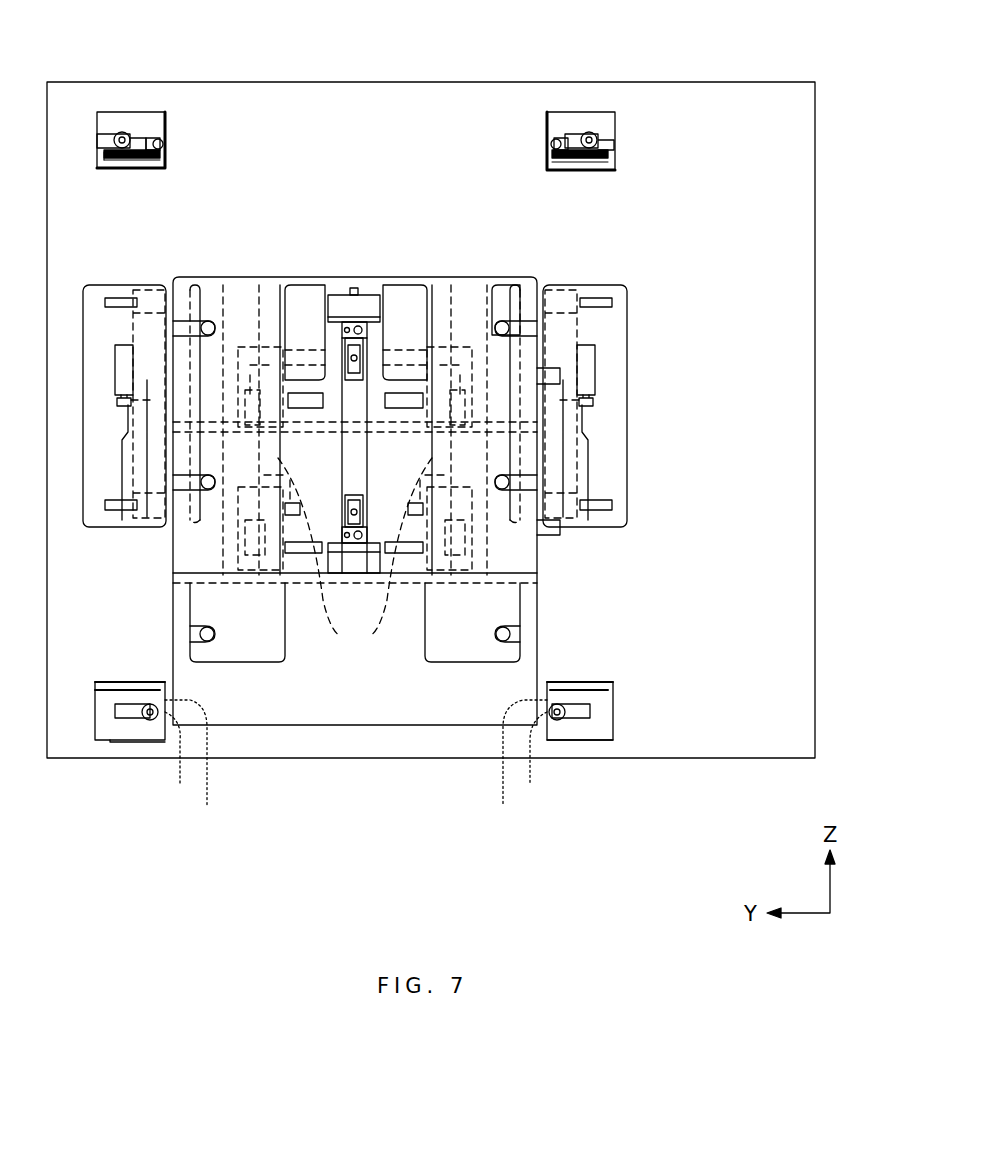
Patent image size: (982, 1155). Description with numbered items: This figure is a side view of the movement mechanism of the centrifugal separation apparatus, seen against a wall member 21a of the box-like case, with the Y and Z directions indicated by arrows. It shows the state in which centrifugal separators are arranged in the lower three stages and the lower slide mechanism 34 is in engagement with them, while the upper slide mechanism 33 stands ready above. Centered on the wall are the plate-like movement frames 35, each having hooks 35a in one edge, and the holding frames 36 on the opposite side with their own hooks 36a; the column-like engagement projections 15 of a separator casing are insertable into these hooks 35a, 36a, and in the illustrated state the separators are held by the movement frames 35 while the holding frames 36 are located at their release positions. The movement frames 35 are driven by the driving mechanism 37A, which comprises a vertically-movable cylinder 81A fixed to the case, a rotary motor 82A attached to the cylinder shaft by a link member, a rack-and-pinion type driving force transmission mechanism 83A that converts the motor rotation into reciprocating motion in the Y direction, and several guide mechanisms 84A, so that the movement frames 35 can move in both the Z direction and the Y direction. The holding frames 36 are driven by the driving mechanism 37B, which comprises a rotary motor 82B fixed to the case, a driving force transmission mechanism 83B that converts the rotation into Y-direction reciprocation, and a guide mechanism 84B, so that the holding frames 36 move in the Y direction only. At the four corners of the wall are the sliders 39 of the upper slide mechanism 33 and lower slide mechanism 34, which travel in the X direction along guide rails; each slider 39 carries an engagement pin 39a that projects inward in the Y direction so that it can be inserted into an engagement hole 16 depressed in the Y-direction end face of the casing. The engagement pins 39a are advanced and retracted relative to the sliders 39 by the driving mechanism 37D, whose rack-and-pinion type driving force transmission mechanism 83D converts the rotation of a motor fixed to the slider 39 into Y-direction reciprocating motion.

The engagement projection 15 is at (497, 318).
The engagement hole 16 is at (356, 759).
The wall member 21a is at (790, 745).
The upper slide mechanism 33 is at (130, 126).
The lower slide mechanism 34 is at (128, 722).
The movement frame 35 is at (240, 312).
The hook 35a is at (190, 634).
The holding frame 36 is at (140, 315).
The hook 36a is at (510, 330).
The driving mechanism 37A is at (345, 388).
The driving mechanism 37B is at (146, 440).
The driving mechanism 37D is at (112, 148).
The slider 39 is at (165, 128).
The engagement pin 39a is at (165, 140).
The vertically-movable cylinder 81A is at (347, 477).
The rotary motor 82A is at (355, 552).
The rotary motor 82B is at (122, 365).
The driving force transmission mechanism 83A is at (289, 515).
The driving force transmission mechanism 83B is at (122, 408).
The driving force transmission mechanism 83D is at (122, 132).
The guide mechanism 84A is at (305, 560).
The guide mechanism 84B is at (110, 300).